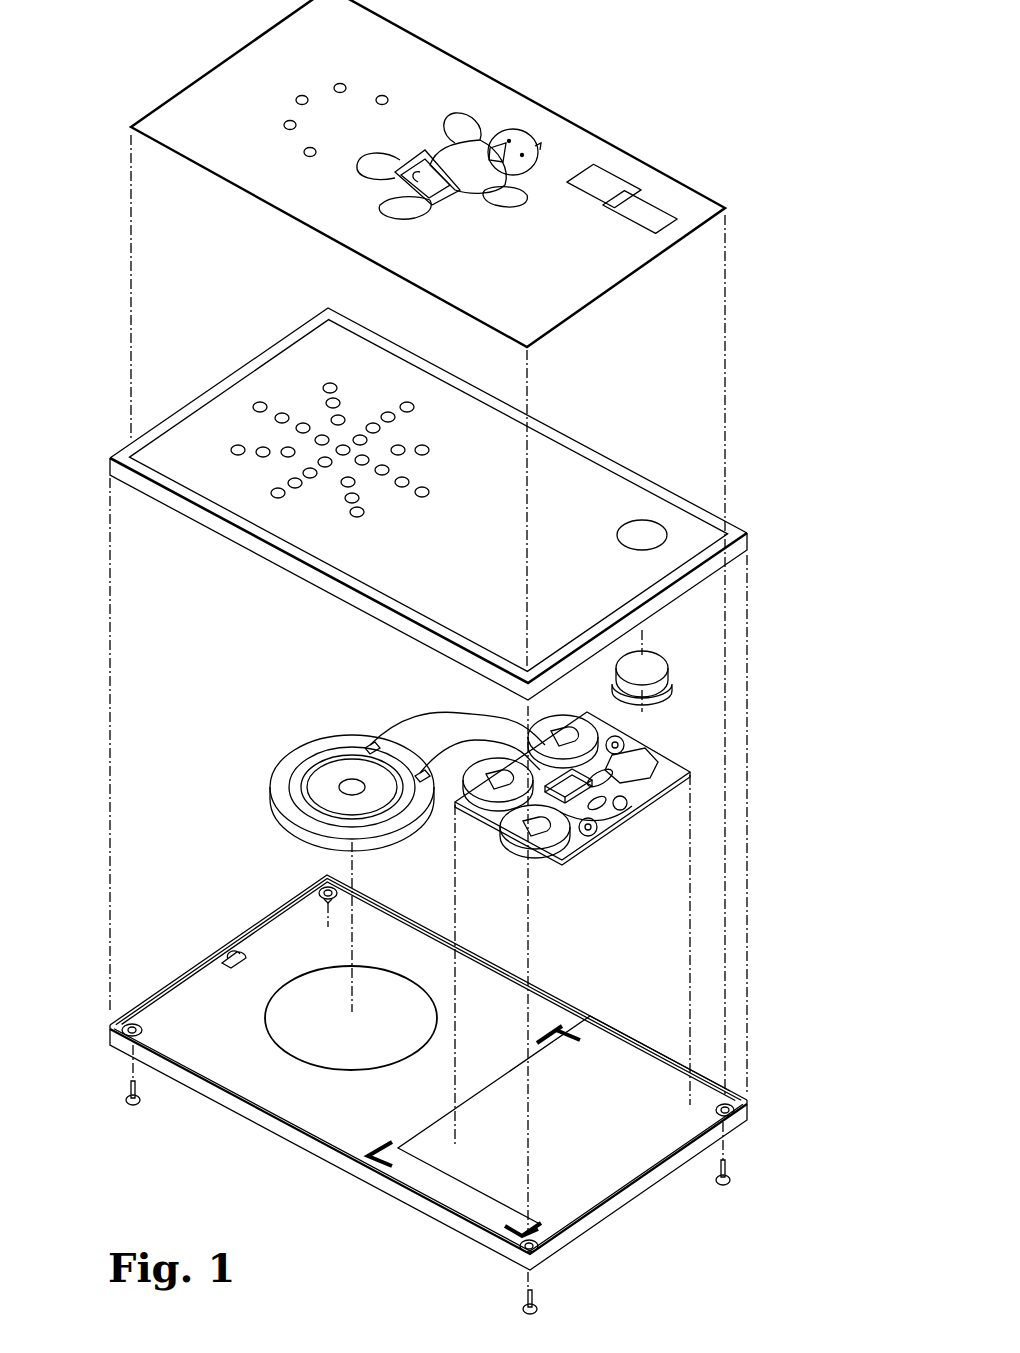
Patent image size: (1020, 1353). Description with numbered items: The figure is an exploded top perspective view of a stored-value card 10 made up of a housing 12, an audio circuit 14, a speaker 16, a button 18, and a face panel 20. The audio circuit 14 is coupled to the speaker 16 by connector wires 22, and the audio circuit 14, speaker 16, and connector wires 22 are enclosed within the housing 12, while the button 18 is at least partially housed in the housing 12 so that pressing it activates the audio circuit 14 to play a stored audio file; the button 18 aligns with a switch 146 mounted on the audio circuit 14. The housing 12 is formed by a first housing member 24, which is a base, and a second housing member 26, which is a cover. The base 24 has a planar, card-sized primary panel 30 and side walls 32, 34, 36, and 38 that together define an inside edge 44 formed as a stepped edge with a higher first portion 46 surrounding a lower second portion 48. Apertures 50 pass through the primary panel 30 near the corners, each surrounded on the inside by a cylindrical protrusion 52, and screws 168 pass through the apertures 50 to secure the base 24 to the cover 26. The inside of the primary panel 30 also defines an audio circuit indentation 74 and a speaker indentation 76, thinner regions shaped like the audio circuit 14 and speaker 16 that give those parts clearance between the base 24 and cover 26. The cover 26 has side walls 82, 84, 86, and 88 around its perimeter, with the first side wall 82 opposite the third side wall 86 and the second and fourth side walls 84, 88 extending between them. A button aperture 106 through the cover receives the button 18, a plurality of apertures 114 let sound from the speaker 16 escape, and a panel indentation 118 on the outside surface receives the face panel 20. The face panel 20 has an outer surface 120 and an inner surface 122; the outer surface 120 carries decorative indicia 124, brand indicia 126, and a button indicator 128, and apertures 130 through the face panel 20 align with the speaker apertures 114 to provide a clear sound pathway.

The stored-value card 10 is at (636, 76).
The housing 12 is at (430, 958).
The audio circuit 14 is at (587, 801).
The speaker 16 is at (322, 750).
The button 18 is at (653, 671).
The face panel 20 is at (461, 88).
The connector wires 22 is at (445, 748).
The first housing member 24 is at (322, 1108).
The second housing member 26 is at (597, 505).
The primary panel 30 is at (262, 1097).
The side wall 32 is at (485, 955).
The side wall 34 is at (667, 1170).
The side wall 36 is at (395, 1193).
The side wall 38 is at (229, 938).
The inside edge 44 is at (270, 907).
The first portion 46 is at (318, 885).
The second portion 48 is at (300, 905).
The apertures 50 is at (110, 1023).
The cylindrical protrusion 52 is at (128, 1042).
The audio circuit indentation 74 is at (545, 1048).
The speaker indentation 76 is at (383, 985).
The first side wall 82 is at (690, 497).
The second side wall 84 is at (708, 570).
The third side wall 86 is at (215, 524).
The fourth side wall 88 is at (237, 365).
The button aperture 106 is at (667, 522).
The apertures 114 is at (237, 445).
The panel indentation 118 is at (560, 478).
The first, outer surface 120 is at (387, 52).
The second, inner surface 122 is at (238, 188).
The decorative indicia 124 is at (484, 212).
The brand indicia 126 is at (620, 172).
The button indicator 128 is at (656, 198).
The apertures 130 is at (338, 84).
The switch 146 is at (640, 767).
The screws 168 is at (133, 1108).